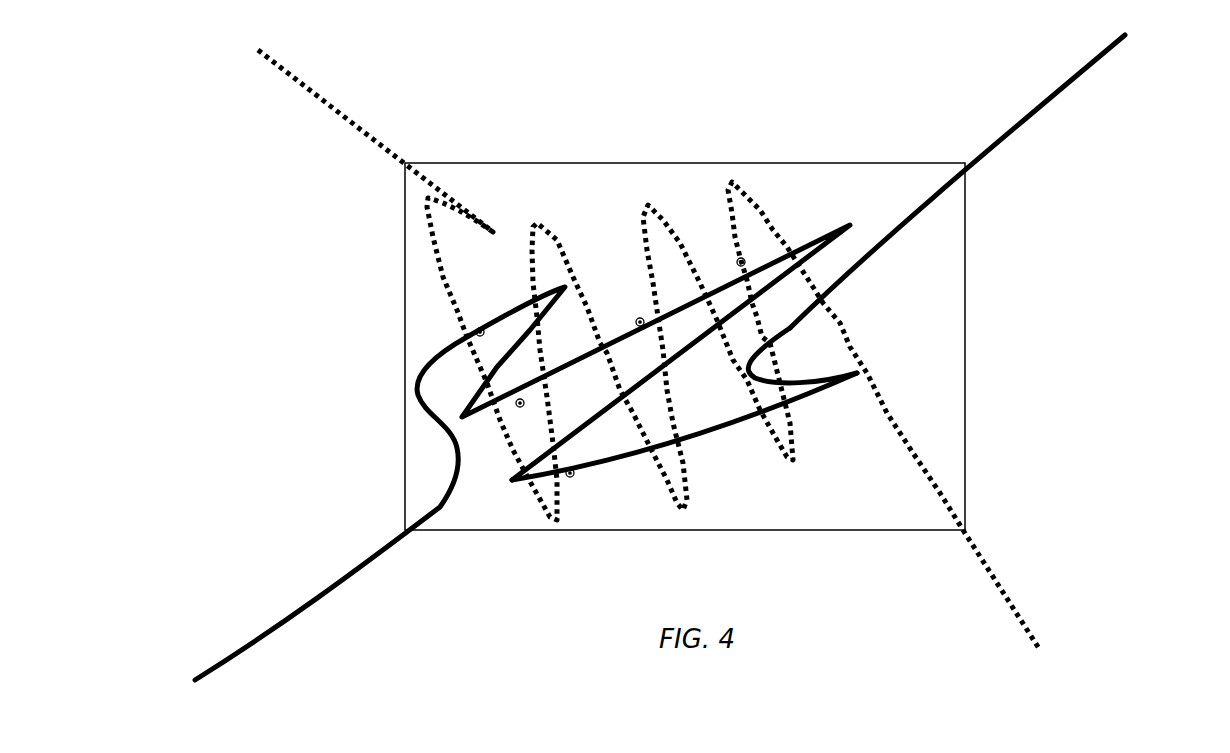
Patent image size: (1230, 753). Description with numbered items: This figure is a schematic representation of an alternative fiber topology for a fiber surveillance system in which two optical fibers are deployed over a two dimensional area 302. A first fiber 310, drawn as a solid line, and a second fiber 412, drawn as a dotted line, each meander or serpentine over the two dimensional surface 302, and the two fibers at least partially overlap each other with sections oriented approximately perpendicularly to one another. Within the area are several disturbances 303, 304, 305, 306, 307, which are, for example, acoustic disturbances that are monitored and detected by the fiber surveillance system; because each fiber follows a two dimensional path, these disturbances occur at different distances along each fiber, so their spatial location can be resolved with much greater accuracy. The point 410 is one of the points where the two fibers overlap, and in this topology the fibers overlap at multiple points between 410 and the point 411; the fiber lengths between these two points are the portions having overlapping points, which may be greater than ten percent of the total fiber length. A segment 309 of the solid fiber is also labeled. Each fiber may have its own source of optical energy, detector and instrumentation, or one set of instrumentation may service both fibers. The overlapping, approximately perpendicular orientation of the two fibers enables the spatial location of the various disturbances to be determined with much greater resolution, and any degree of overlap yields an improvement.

The two dimensional area 302 is at (965, 351).
The disturbance 303 is at (722, 255).
The disturbance 304 is at (626, 310).
The disturbance 305 is at (521, 415).
The disturbance 306 is at (471, 320).
The disturbance 307 is at (578, 486).
The path segment 309 is at (687, 443).
The fiber 310 is at (694, 357).
The overlap point 410 is at (827, 297).
The overlap point 411 is at (345, 374).
The fiber 412 is at (1040, 648).